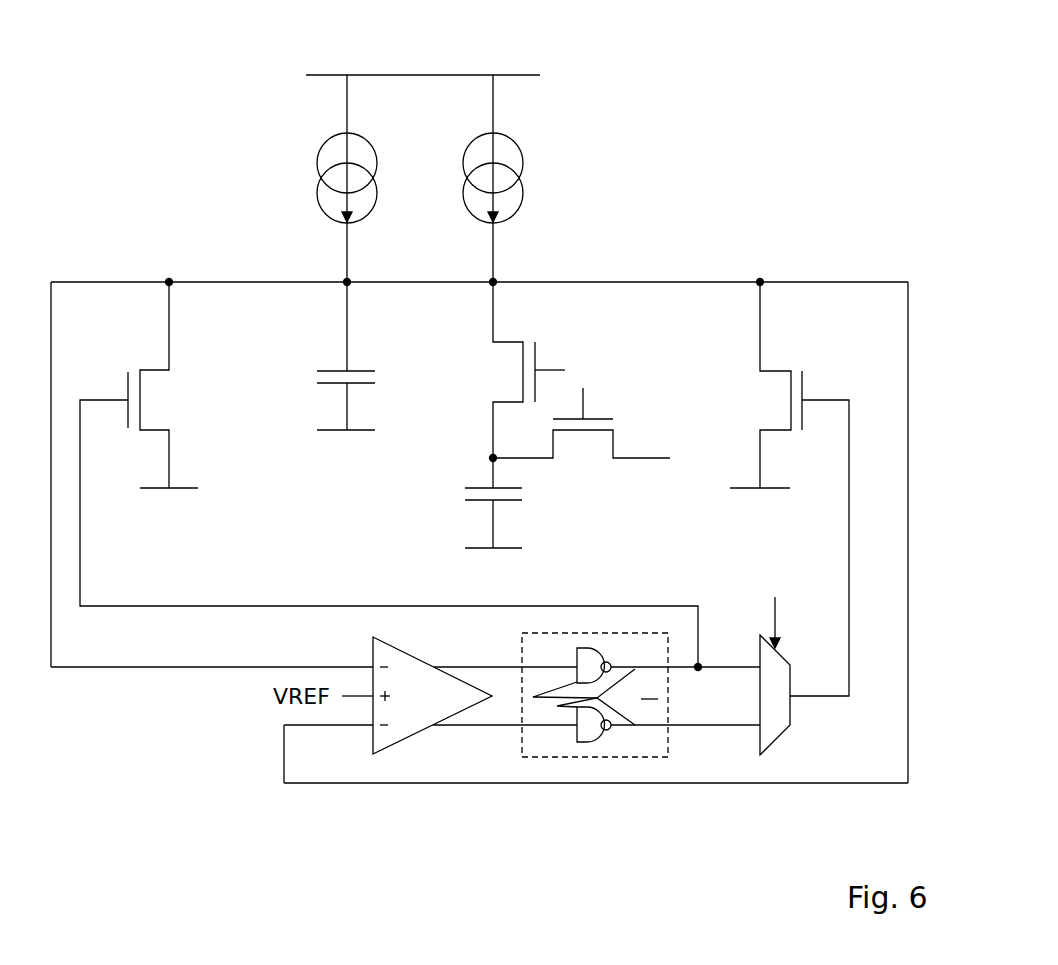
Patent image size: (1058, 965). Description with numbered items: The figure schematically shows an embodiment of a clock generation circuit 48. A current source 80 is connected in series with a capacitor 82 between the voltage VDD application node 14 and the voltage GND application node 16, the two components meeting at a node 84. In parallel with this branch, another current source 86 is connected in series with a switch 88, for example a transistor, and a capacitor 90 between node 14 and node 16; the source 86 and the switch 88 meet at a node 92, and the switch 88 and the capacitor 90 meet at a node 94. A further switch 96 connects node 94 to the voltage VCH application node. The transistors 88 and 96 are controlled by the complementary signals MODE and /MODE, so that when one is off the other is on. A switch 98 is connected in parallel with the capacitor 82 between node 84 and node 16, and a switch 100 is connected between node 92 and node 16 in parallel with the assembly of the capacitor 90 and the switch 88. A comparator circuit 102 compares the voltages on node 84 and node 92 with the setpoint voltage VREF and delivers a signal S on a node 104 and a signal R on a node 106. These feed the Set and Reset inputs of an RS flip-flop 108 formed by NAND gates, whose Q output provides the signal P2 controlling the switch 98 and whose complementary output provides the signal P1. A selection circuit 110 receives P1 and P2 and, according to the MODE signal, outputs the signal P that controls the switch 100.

The voltage VDD application node 14 is at (327, 73).
The voltage GND application node 16 is at (182, 490).
The clock generation circuit 48 is at (662, 149).
The current source 80 is at (318, 160).
The capacitor 82 is at (360, 372).
The node 84 is at (352, 280).
The current source 86 is at (523, 160).
The switch 88 is at (520, 342).
The capacitor 90 is at (518, 501).
The node 92 is at (497, 280).
The node 94 is at (490, 458).
The switch 96 is at (615, 455).
The switch 98 is at (150, 368).
The switch 100 is at (772, 370).
The comparator circuit 102 is at (405, 756).
The node 104 is at (520, 667).
The node 106 is at (520, 726).
The RS flip-flop 108 is at (633, 760).
The selection circuit 110 is at (778, 742).